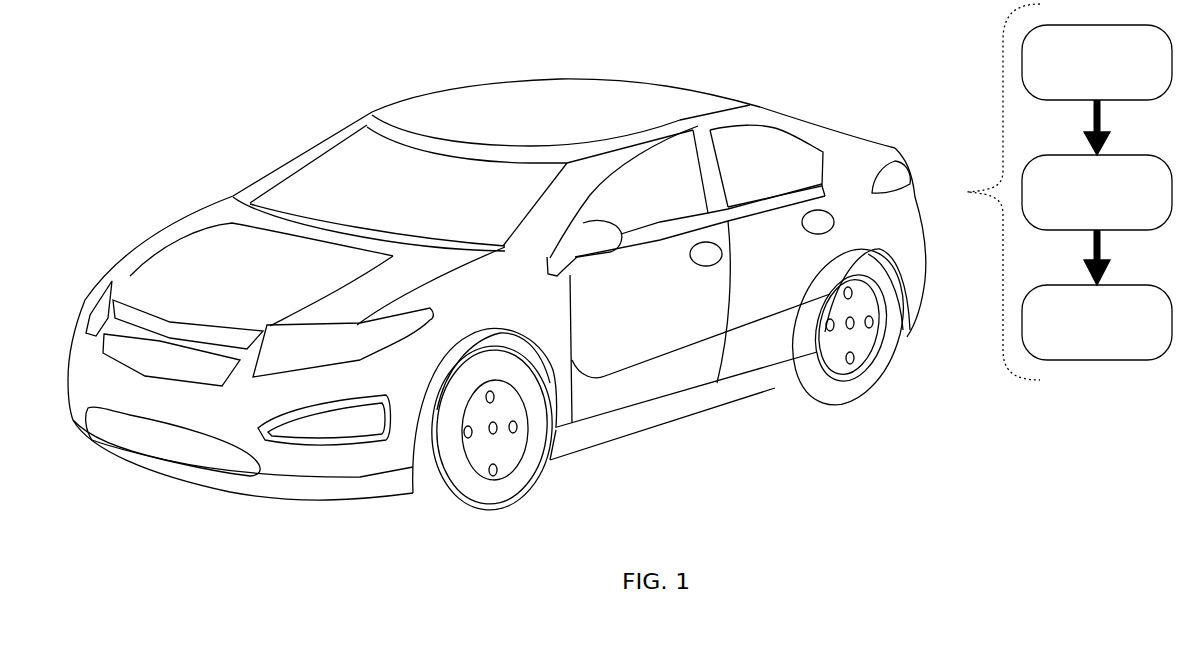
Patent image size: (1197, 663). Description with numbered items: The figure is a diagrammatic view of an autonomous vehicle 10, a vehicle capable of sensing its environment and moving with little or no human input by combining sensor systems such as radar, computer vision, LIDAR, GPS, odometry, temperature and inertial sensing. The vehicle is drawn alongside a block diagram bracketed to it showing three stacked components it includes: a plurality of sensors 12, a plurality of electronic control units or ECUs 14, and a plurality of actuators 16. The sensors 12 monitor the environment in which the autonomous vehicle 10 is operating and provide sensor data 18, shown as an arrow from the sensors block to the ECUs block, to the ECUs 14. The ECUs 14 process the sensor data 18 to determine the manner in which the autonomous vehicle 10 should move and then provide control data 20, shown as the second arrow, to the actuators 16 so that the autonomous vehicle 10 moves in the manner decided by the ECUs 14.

The autonomous vehicle 10 is at (300, 157).
The sensors 12 is at (1097, 62).
The ECUs 14 is at (1097, 192).
The actuators 16 is at (1097, 322).
The sensor data 18 is at (1127, 127).
The control data 20 is at (1127, 257).